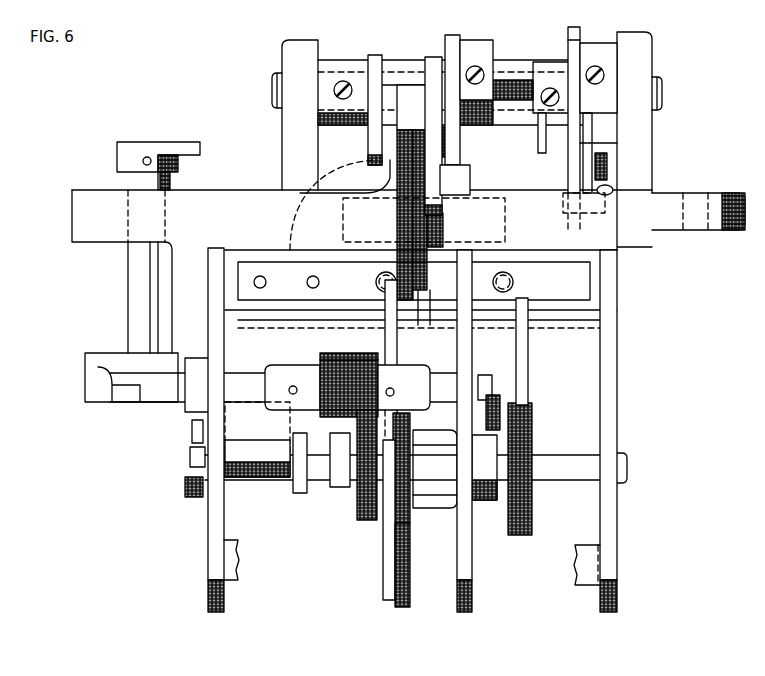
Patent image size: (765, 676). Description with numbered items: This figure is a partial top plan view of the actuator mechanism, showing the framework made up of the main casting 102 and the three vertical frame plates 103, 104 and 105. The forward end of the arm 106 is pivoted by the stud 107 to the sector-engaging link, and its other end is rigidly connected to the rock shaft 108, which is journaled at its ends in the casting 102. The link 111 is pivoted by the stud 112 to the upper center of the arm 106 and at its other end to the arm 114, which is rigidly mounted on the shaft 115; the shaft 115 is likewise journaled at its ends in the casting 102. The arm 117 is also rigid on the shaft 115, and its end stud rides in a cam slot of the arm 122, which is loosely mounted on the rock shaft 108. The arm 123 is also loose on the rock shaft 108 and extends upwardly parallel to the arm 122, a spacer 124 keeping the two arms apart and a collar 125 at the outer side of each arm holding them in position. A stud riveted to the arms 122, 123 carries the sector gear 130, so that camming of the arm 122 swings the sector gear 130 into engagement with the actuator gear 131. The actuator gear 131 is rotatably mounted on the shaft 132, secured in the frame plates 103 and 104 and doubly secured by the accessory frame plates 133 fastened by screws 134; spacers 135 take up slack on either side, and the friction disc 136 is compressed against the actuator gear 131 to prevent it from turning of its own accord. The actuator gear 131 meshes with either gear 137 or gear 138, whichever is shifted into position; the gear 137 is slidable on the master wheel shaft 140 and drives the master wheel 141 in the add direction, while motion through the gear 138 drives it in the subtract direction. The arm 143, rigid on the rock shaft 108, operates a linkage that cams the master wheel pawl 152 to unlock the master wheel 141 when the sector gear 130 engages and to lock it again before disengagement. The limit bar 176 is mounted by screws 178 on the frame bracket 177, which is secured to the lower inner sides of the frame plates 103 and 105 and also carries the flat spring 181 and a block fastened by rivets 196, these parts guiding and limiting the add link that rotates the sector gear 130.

The main casting 102 is at (303, 50).
The left actuator frame plate 103 is at (218, 615).
The center actuator frame plate 104 is at (463, 615).
The right hand actuator frame plate 105 is at (605, 615).
The arm 106 is at (575, 140).
The stud 107 is at (612, 191).
The rock shaft 108 is at (275, 92).
The link 111 is at (620, 143).
The stud 112 is at (608, 170).
The arm 114 is at (605, 48).
The shaft 115 is at (519, 62).
The arm 117 is at (478, 50).
The arm 122 is at (432, 60).
The arm 123 is at (373, 58).
The spacer 124 is at (408, 70).
The collar 125 is at (355, 68).
The sector gear 130 is at (395, 218).
The actuator gear 131 is at (388, 585).
The shaft 132 is at (190, 430).
The accessory frame plate 133 is at (190, 452).
The screw 134 is at (188, 495).
The spacer 135 is at (247, 410).
The friction disc 136 is at (425, 422).
The gear 137 is at (400, 527).
The gear 138 is at (360, 358).
The master wheel shaft 140 is at (240, 470).
The master wheel 141 is at (528, 504).
The arm 143 is at (538, 140).
The master wheel pawl 152 is at (521, 368).
The limit bar 176 is at (340, 170).
The frame bracket 177 is at (243, 308).
The screw 178 is at (308, 288).
The flat spring 181 is at (448, 238).
The rivet 196 is at (380, 290).